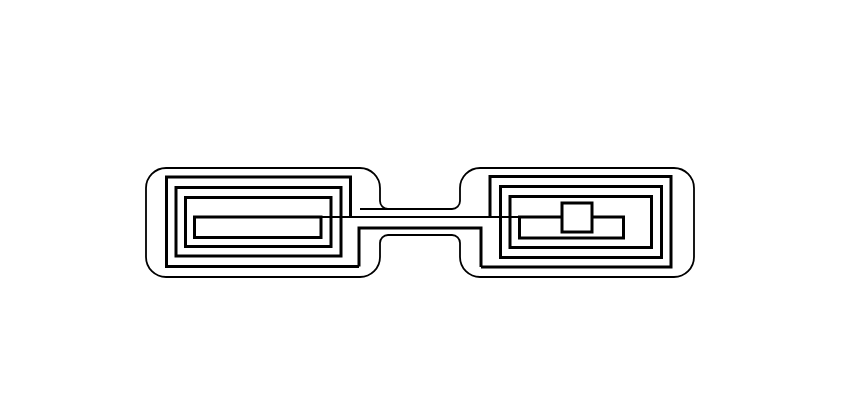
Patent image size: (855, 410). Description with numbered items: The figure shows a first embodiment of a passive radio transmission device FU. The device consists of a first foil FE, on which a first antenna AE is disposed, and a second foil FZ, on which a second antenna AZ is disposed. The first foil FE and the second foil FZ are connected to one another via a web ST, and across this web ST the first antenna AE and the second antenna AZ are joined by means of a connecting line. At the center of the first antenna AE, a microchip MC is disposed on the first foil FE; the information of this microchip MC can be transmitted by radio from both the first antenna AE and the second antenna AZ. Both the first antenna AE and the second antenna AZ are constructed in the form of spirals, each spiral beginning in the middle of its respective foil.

The radio transmission device FU is at (462, 108).
The second foil FZ is at (151, 218).
The first foil FE is at (682, 222).
The web ST is at (425, 224).
The second antenna AZ is at (270, 177).
The first antenna AE is at (527, 177).
The microchip MC is at (577, 215).